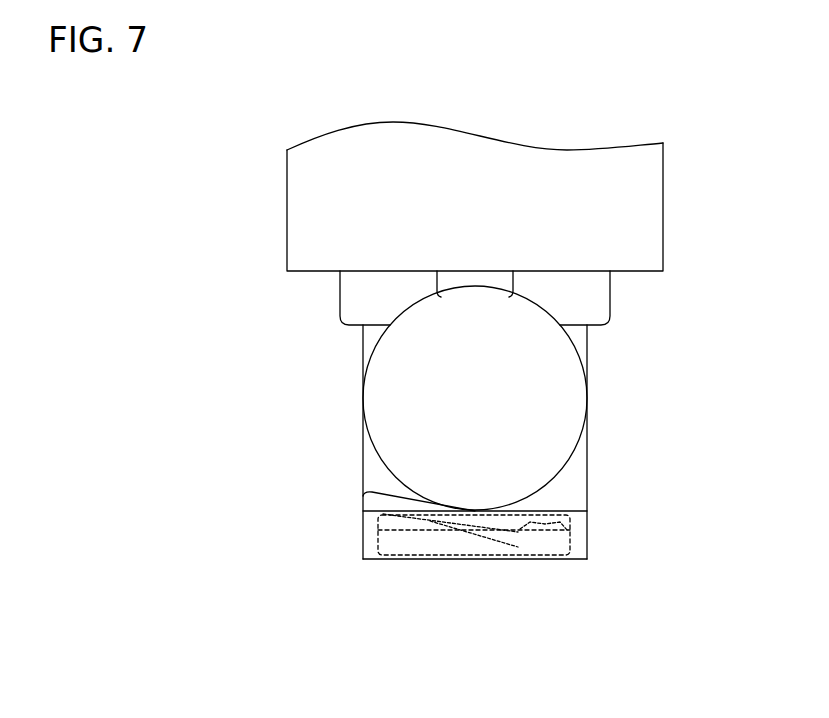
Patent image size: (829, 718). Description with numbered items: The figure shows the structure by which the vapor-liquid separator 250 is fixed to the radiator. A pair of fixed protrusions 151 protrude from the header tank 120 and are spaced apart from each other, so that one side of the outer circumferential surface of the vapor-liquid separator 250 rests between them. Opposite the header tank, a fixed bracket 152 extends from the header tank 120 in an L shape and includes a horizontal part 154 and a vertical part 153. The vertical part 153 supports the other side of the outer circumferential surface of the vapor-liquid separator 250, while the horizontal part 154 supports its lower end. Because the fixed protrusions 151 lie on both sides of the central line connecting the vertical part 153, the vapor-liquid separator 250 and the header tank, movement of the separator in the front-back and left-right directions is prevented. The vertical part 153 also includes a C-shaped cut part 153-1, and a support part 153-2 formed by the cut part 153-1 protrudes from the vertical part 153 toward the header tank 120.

The 1-2-th header tank 120 is at (562, 156).
The fixed protrusions 151 is at (352, 311).
The vapor-liquid separator 250 is at (370, 425).
The fixed bracket 152 is at (541, 466).
The horizontal part 154 is at (588, 481).
The vertical part 153 is at (515, 559).
The cut part 153-1 is at (536, 537).
The support part 153-2 is at (439, 540).